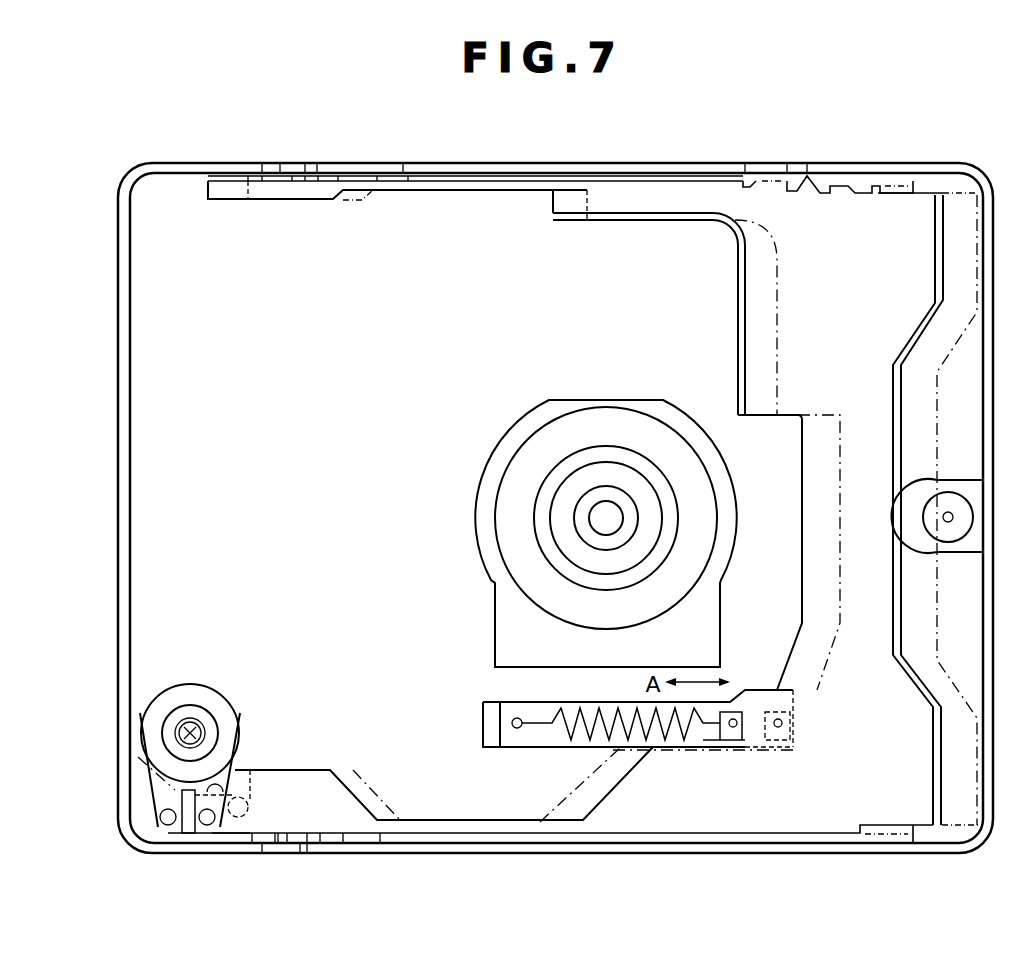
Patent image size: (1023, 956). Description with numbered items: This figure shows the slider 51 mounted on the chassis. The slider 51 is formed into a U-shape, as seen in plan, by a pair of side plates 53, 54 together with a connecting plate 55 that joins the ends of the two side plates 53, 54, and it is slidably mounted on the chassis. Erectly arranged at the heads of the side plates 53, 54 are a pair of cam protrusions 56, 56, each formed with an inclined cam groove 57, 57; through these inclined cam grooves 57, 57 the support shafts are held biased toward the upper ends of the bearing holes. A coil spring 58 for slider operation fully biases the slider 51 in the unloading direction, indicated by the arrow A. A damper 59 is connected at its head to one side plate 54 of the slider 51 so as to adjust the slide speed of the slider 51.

The slider 51 is at (400, 330).
The side plate 53 is at (473, 194).
The side plate 54 is at (468, 812).
The connecting plate 55 is at (728, 381).
The cam protrusion 56 is at (343, 836).
The inclined cam groove 57 is at (307, 842).
The coil spring 58 is at (583, 727).
The damper 59 is at (167, 703).